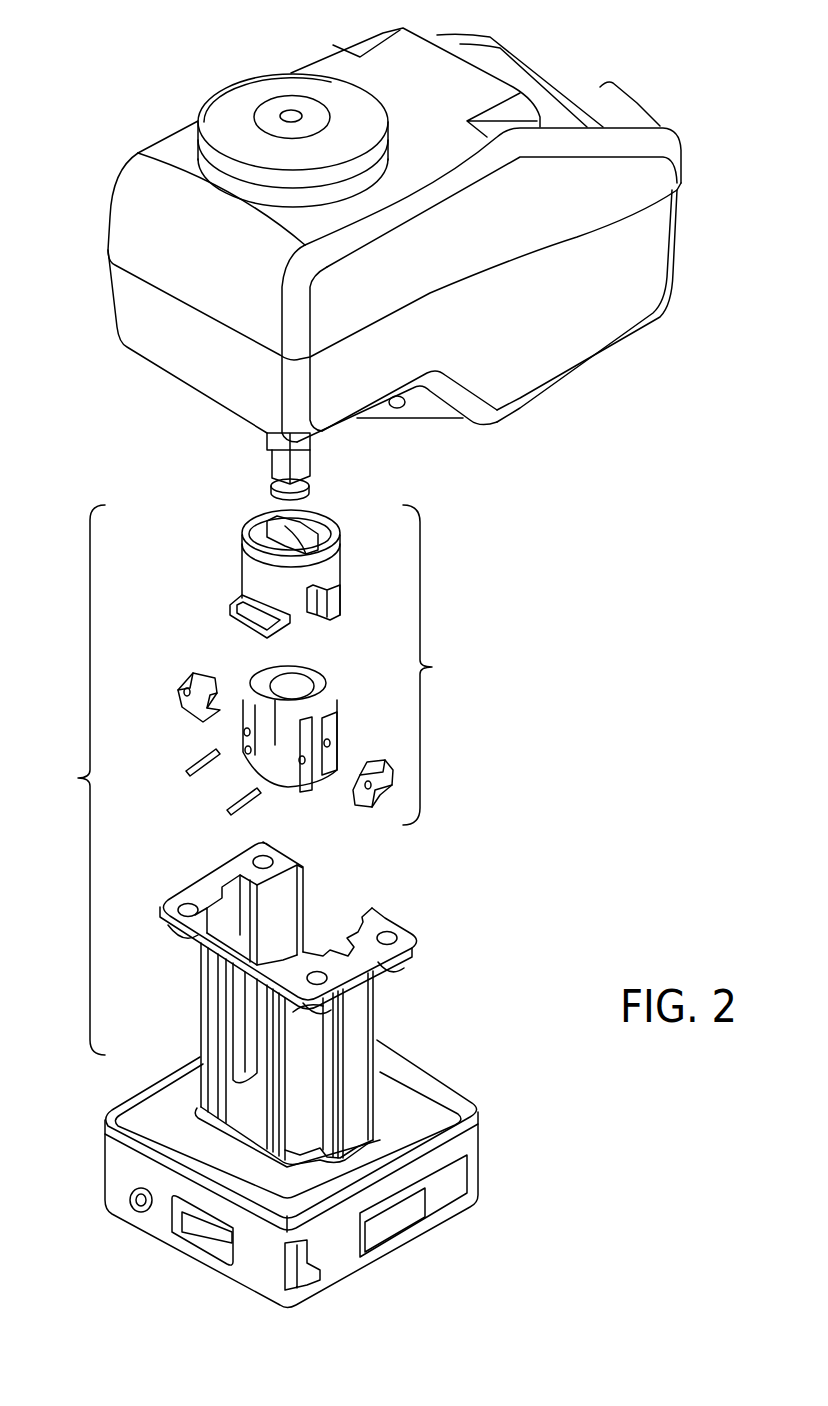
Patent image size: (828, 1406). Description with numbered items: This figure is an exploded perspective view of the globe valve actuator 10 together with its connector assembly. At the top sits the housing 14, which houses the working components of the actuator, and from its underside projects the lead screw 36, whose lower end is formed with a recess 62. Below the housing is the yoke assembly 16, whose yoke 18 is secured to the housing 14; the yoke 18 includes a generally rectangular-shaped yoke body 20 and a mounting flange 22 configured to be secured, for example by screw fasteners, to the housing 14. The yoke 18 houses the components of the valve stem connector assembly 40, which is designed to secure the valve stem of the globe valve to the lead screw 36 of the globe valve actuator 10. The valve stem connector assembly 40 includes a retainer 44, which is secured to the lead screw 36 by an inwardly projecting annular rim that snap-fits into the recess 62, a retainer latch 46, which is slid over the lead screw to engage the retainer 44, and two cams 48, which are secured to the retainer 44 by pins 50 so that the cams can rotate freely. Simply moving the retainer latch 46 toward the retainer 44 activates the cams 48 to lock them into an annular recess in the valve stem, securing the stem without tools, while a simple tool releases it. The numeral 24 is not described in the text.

The globe valve actuator 10 is at (109, 118).
The housing 14 is at (612, 315).
The yoke assembly 16 is at (67, 772).
The yoke 18 is at (377, 1021).
The yoke body 20 is at (357, 1080).
The mounting flange 22 is at (385, 922).
The base 24 is at (118, 1168).
The lead screw 36 is at (302, 462).
The valve stem connector assembly 40 is at (444, 660).
The retainer 44 is at (339, 656).
The retainer latch 46 is at (235, 523).
The cams 48 is at (177, 664).
The pins 50 is at (230, 802).
The recess 62 is at (270, 478).